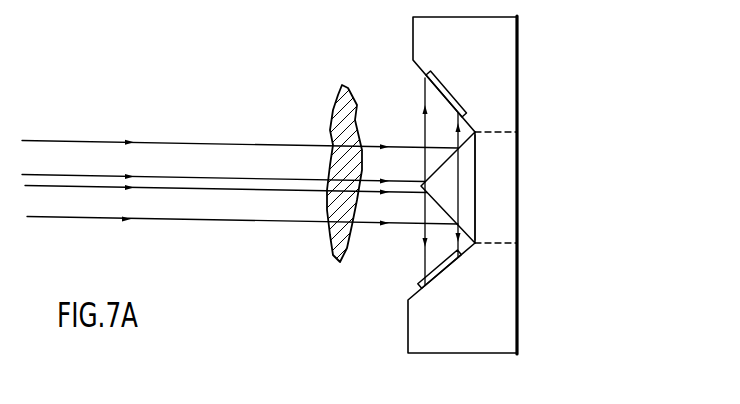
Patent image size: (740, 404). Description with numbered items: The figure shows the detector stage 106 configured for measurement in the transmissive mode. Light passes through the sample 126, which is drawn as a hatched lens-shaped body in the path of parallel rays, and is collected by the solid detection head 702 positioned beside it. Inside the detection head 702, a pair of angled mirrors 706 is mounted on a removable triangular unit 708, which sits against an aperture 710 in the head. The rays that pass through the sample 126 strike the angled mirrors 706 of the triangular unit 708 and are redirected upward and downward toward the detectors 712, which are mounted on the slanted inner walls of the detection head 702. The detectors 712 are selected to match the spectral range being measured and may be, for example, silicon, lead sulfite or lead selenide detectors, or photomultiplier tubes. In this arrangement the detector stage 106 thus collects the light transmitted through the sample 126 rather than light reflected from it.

The detector stage 106 is at (572, 72).
The sample 126 is at (335, 103).
The detection head 702 is at (413, 36).
The angled mirrors 706 is at (443, 206).
The removable triangular unit 708 is at (468, 161).
The aperture 710 is at (508, 220).
The detectors 712 is at (447, 92).